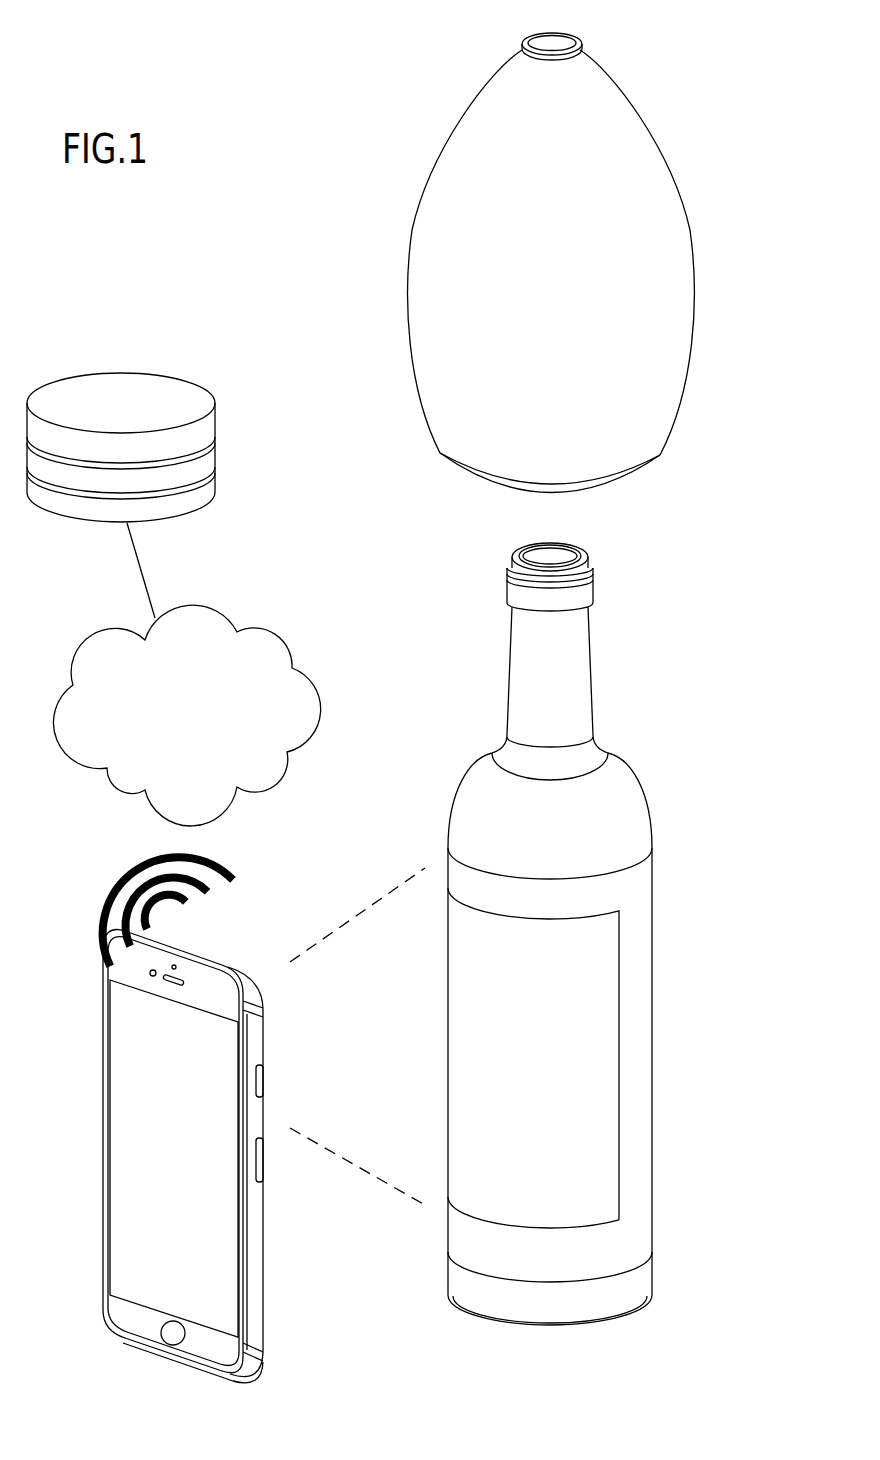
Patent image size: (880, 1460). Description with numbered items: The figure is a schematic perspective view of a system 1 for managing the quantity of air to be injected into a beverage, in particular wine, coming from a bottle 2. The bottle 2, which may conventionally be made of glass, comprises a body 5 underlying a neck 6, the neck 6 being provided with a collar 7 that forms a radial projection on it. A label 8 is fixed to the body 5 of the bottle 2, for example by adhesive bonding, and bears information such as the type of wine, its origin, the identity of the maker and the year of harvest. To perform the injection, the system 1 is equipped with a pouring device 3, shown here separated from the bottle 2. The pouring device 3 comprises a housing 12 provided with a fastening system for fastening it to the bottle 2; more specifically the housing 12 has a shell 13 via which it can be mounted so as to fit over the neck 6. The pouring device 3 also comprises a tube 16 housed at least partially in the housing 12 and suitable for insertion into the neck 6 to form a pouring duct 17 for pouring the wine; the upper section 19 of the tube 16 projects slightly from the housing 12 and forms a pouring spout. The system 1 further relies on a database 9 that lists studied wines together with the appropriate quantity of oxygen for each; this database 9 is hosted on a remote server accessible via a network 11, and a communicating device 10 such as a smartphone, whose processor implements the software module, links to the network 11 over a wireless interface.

The system 1 is at (237, 322).
The bottle 2 is at (496, 934).
The pouring device 3 is at (557, 248).
The body 5 is at (643, 1018).
The neck 6 is at (580, 677).
The collar 7 is at (588, 590).
The label 8 is at (463, 1045).
The database 9 is at (212, 422).
The communicating device 10 is at (103, 1138).
The network 11 is at (197, 712).
The housing 12 is at (684, 200).
The shell 13 is at (422, 290).
The tube 16 is at (540, 58).
The pouring duct 17 is at (552, 46).
The upper section 19 is at (580, 47).